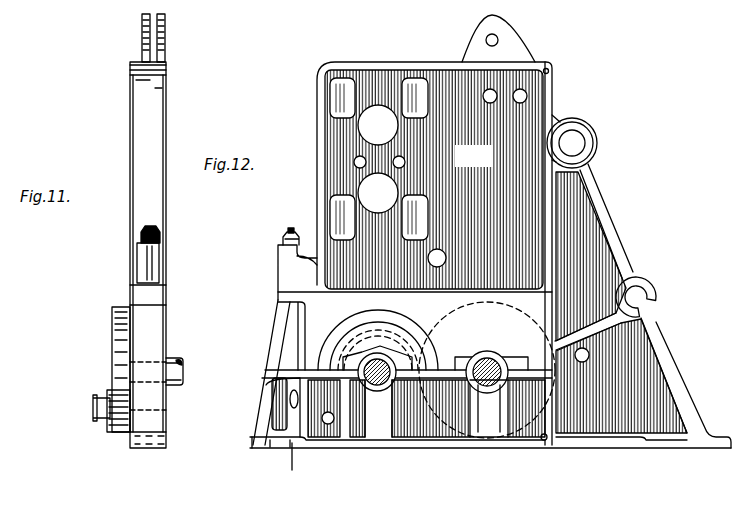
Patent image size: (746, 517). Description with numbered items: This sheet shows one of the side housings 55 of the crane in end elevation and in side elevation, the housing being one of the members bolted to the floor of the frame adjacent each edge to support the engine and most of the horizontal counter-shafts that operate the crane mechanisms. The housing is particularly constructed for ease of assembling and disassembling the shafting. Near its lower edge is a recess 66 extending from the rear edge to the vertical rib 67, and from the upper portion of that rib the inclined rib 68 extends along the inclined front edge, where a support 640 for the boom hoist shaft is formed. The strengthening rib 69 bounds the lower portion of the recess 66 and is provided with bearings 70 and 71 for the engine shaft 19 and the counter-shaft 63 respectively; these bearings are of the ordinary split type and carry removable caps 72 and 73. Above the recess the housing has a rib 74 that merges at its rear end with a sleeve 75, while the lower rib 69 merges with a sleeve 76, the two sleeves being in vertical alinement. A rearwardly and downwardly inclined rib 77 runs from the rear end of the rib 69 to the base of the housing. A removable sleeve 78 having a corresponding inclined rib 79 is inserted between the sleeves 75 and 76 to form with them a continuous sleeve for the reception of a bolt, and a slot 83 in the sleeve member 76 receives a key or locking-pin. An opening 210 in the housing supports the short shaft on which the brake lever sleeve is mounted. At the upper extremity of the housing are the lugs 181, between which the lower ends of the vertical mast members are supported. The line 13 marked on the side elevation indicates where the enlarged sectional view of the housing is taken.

The section line 13— 13 is at (291, 228).
The engine shaft 19 is at (378, 392).
The housings 55 is at (474, 156).
The counter-shaft 63 is at (505, 405).
The recess 66 is at (378, 339).
The vertical rib 67 is at (552, 270).
The inclined rib 68 is at (618, 240).
The strengthening rib 69 is at (487, 370).
The bearing 70 is at (400, 430).
The bearing 71 is at (490, 392).
The removable cap 72 is at (390, 360).
The removable cap 73 is at (500, 352).
The rib 74 is at (390, 300).
The sleeve 75 is at (278, 270).
The sleeve 76 is at (268, 415).
The inclined rib 77 is at (270, 398).
The removable sleeve 78 is at (290, 332).
The inclined rib 79 is at (275, 358).
The slot 83 is at (294, 410).
The lugs 181 is at (520, 48).
The opening 210 is at (440, 254).
The support 640 is at (598, 138).